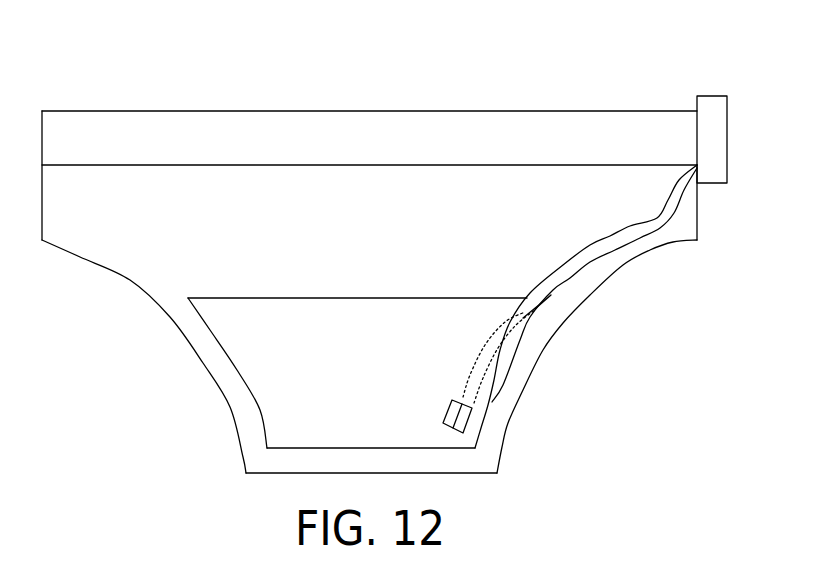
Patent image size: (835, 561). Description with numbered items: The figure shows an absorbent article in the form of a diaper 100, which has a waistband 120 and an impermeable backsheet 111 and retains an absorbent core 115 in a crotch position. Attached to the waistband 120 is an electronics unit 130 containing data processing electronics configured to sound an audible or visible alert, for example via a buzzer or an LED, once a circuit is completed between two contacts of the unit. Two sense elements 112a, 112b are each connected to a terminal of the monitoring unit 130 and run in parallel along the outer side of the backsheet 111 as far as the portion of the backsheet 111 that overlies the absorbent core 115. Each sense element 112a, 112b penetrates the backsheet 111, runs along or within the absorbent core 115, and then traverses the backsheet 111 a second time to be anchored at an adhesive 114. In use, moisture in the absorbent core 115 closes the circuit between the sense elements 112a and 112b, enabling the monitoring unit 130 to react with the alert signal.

The diaper 100 is at (74, 91).
The impermeable backsheet 111 is at (675, 232).
The sense element 112a is at (615, 249).
The sense element 112b is at (551, 276).
The adhesive 114 is at (471, 416).
The absorbent core 115 is at (505, 352).
The waistband 120 is at (600, 128).
The electronics unit 130 is at (714, 140).